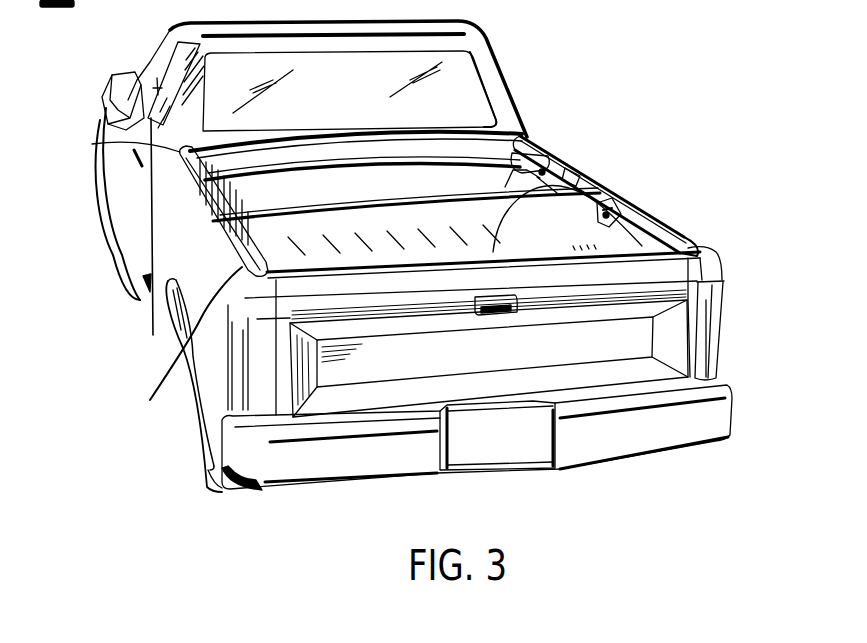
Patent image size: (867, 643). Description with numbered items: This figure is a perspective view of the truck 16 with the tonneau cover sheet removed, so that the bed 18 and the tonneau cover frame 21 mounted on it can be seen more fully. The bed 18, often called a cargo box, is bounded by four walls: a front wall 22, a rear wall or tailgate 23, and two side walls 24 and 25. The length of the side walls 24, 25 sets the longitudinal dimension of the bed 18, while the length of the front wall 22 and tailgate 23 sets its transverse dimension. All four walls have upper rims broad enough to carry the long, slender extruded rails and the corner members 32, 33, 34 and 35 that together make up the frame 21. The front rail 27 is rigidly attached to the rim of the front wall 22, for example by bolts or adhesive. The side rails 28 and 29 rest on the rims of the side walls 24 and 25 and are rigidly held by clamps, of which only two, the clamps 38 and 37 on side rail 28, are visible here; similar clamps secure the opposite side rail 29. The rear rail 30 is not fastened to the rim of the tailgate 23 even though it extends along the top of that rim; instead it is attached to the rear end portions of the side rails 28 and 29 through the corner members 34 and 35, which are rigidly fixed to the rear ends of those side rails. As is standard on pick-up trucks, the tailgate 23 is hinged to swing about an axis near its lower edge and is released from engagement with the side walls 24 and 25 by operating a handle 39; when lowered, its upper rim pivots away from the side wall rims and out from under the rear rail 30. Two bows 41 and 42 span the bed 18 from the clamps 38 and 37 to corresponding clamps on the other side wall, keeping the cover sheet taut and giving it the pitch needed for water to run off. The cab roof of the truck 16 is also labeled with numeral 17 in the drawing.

The truck 16 is at (717, 348).
The cab roof 17 is at (470, 25).
The bed 18 is at (163, 313).
The tonneau cover frame 21 is at (713, 250).
The front wall 22 is at (202, 180).
The tailgate 23 is at (584, 350).
The side wall 24 is at (523, 157).
The side wall 25 is at (163, 262).
The front rail 27 is at (470, 138).
The side rail 28 is at (617, 193).
The side rail 29 is at (213, 222).
The rear rail 30 is at (720, 282).
The corner member 32 is at (480, 163).
The corner member 33 is at (180, 153).
The corner member 34 is at (692, 236).
The corner member 35 is at (150, 400).
The clamp 37 is at (575, 158).
The clamp 38 is at (612, 205).
The handle 39 is at (475, 315).
The bow 41 is at (357, 150).
The bow 42 is at (583, 178).